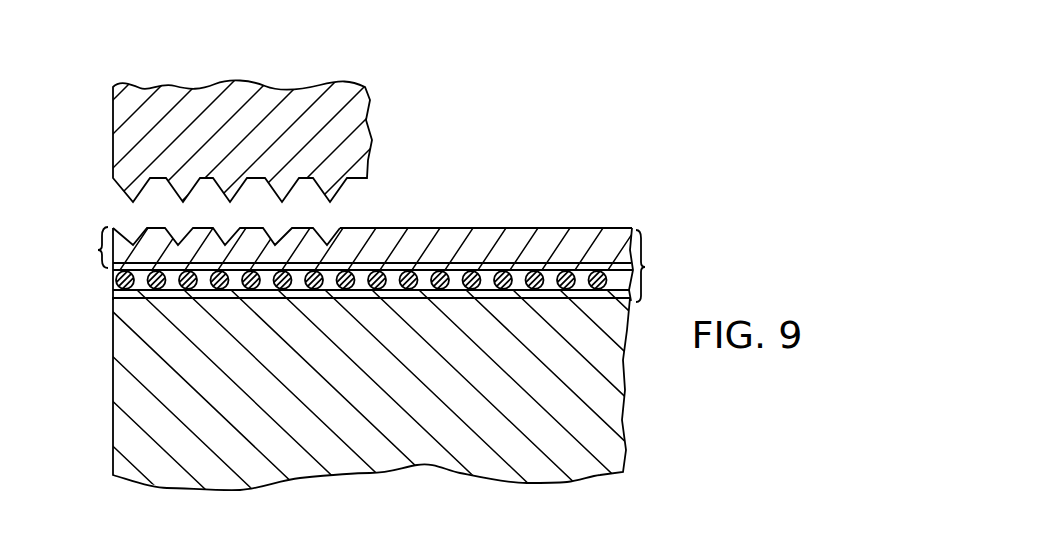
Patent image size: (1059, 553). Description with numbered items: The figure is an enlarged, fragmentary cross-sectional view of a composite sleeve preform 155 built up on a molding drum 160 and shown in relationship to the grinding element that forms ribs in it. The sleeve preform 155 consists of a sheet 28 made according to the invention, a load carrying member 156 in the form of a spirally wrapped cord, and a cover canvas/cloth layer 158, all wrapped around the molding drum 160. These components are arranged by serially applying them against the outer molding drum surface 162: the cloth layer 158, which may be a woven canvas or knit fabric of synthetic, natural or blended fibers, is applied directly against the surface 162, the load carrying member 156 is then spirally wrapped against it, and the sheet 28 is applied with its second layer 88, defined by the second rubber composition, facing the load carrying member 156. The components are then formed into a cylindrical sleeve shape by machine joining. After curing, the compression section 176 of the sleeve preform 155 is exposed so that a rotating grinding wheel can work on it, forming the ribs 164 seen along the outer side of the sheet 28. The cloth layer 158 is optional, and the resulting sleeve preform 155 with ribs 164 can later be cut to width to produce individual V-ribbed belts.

The sheet 28 is at (100, 250).
The second layer 88 is at (528, 265).
The composite sleeve preform 155 is at (644, 267).
The load carrying member 156 is at (220, 296).
The cover canvas/cloth layer 158 is at (317, 295).
The molding drum 160 is at (587, 423).
The outer molding drum surface 162 is at (635, 232).
The ribs 164 is at (210, 228).
The compression section 176 is at (436, 228).